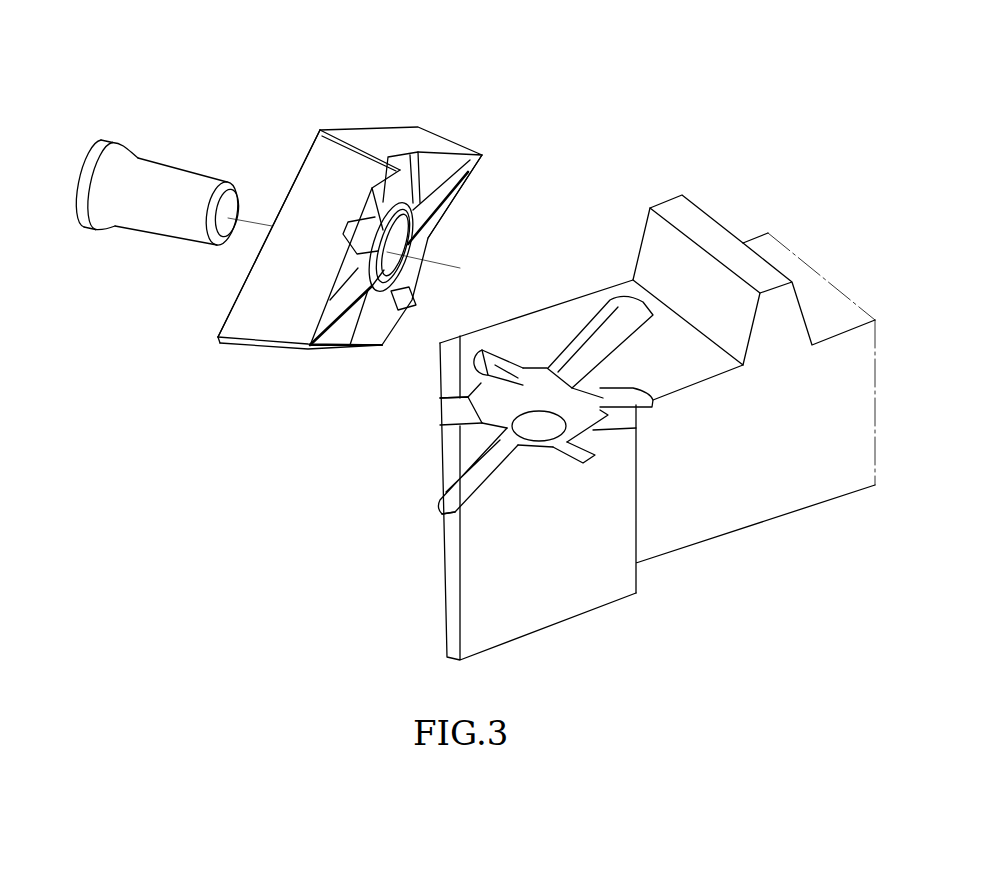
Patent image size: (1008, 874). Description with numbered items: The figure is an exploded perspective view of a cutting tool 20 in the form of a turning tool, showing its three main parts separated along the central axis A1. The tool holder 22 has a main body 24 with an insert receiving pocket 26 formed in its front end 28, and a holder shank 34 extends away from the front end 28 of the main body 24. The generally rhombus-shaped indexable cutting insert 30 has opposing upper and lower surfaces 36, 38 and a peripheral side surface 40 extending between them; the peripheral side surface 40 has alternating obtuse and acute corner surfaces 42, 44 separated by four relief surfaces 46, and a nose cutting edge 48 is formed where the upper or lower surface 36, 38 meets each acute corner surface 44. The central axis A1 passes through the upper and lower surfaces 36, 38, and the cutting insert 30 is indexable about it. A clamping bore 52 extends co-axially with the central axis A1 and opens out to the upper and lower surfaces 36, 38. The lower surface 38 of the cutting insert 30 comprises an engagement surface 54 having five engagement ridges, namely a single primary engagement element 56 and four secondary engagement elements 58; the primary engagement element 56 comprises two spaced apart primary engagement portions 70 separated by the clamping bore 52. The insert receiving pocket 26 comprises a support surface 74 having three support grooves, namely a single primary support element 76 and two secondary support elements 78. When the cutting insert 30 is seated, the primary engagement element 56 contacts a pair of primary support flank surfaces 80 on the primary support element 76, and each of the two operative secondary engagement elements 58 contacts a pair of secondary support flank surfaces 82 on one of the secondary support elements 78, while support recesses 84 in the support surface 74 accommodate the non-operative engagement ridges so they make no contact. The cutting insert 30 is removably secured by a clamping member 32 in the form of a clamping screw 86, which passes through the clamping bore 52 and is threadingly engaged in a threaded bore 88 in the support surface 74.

The cutting tool 20 is at (557, 90).
The tool holder 22 is at (691, 173).
The main body 24 is at (751, 453).
The insert receiving pocket 26 is at (534, 347).
The front end 28 is at (497, 588).
The cutting insert 30 is at (390, 107).
The clamping member 32 is at (151, 147).
The holder shank 34 is at (805, 288).
The upper surface 36 is at (224, 318).
The lower surface 38 is at (345, 340).
The peripheral side surface 40 is at (261, 272).
The obtuse corner surface 42 is at (348, 143).
The acute corner surface 44 is at (243, 337).
The relief surface 46 is at (412, 143).
The nose cutting edge 48 is at (220, 337).
The clamping bore 52 is at (394, 243).
The engagement surface 54 is at (429, 232).
The primary engagement element 56 is at (461, 166).
The secondary engagement element 58 is at (367, 223).
The primary engagement portion 70 is at (457, 184).
The support surface 74 is at (558, 333).
The primary support element 76 is at (462, 471).
The secondary support element 78 is at (490, 361).
The primary support flank surface 80 is at (462, 496).
The secondary support flank surface 82 is at (512, 365).
The support recess 84 is at (605, 292).
The clamping screw 86 is at (160, 187).
The threaded bore 88 is at (530, 432).
The central axis A1 is at (362, 253).